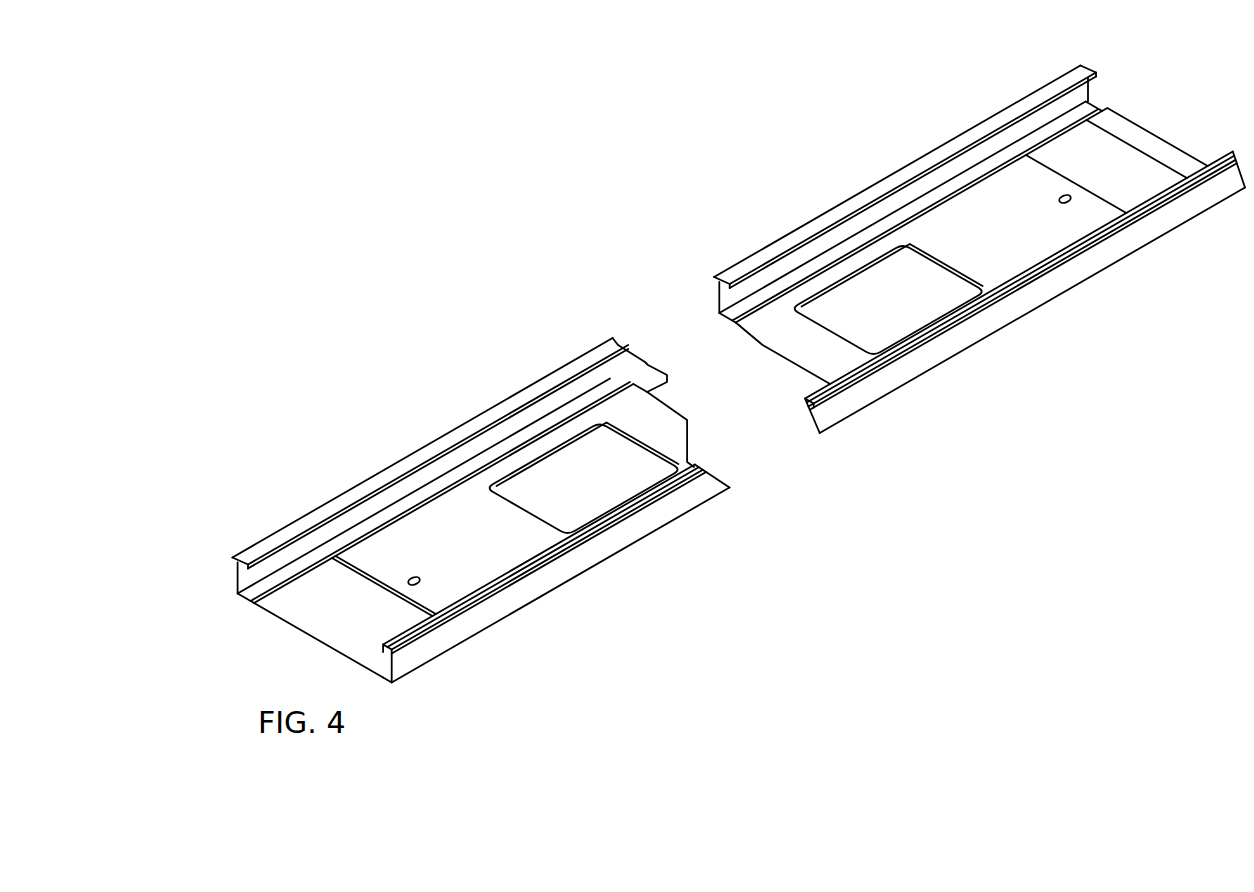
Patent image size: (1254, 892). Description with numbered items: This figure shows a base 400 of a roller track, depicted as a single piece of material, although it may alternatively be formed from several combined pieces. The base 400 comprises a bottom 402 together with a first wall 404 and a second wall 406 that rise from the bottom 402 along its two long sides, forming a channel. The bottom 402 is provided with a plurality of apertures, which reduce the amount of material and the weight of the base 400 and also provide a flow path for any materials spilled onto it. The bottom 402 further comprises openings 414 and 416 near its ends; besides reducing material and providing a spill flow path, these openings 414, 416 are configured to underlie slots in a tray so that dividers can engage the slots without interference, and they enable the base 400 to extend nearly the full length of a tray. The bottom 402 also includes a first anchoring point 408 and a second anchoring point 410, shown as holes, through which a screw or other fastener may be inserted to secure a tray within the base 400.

The base 400 is at (429, 518).
The bottom 402 is at (980, 250).
The first wall 404 is at (211, 576).
The second wall 406 is at (445, 685).
The first anchoring point 408 is at (420, 580).
The second anchoring point 410 is at (1058, 201).
The opening 414 is at (337, 624).
The opening 416 is at (1131, 158).